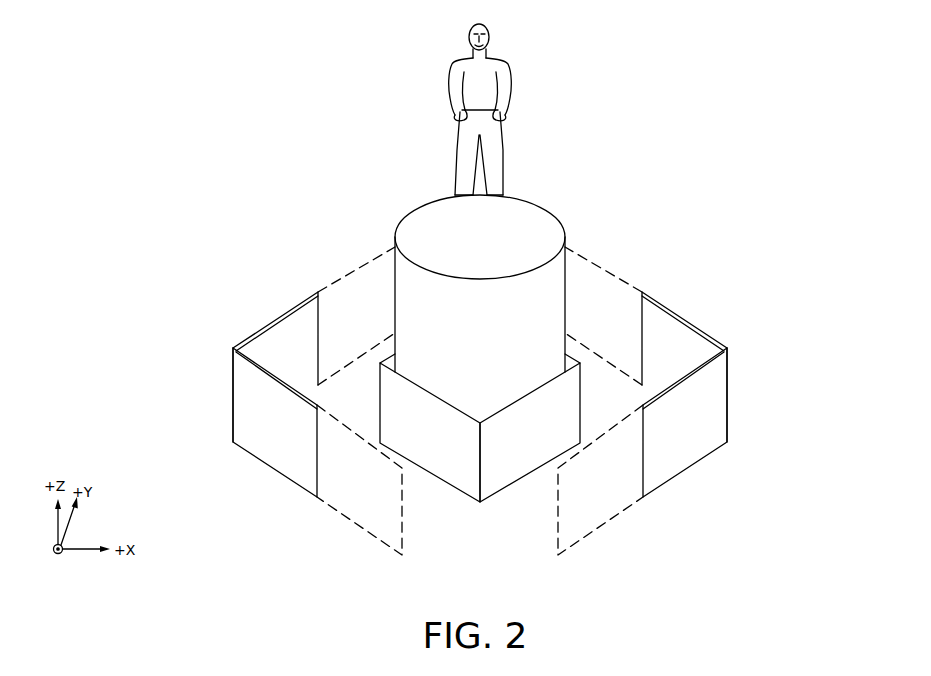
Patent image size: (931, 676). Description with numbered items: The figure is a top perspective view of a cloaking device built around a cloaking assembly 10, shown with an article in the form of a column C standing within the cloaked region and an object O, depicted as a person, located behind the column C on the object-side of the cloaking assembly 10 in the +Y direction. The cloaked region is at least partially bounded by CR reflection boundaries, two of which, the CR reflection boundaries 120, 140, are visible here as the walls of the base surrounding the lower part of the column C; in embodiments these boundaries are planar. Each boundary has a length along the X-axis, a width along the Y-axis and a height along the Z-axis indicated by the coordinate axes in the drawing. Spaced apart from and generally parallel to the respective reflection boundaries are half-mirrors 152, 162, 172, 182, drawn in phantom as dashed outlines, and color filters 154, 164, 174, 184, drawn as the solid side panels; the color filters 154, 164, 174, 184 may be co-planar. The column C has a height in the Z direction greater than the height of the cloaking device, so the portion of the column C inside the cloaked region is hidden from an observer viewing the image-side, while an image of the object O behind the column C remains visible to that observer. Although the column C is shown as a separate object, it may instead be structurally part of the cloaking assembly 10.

The cloaking assembly 10 is at (733, 200).
The object O is at (517, 71).
The column C is at (472, 342).
The CR reflection boundary 120 is at (527, 476).
The CR reflection boundary 140 is at (432, 476).
The half-mirror 152 is at (590, 255).
The color filter 154 is at (682, 315).
The half-mirror 162 is at (604, 527).
The color filter 164 is at (694, 465).
The half-mirror 172 is at (370, 255).
The color filter 174 is at (278, 315).
The half-mirror 182 is at (356, 527).
The color filter 184 is at (266, 465).